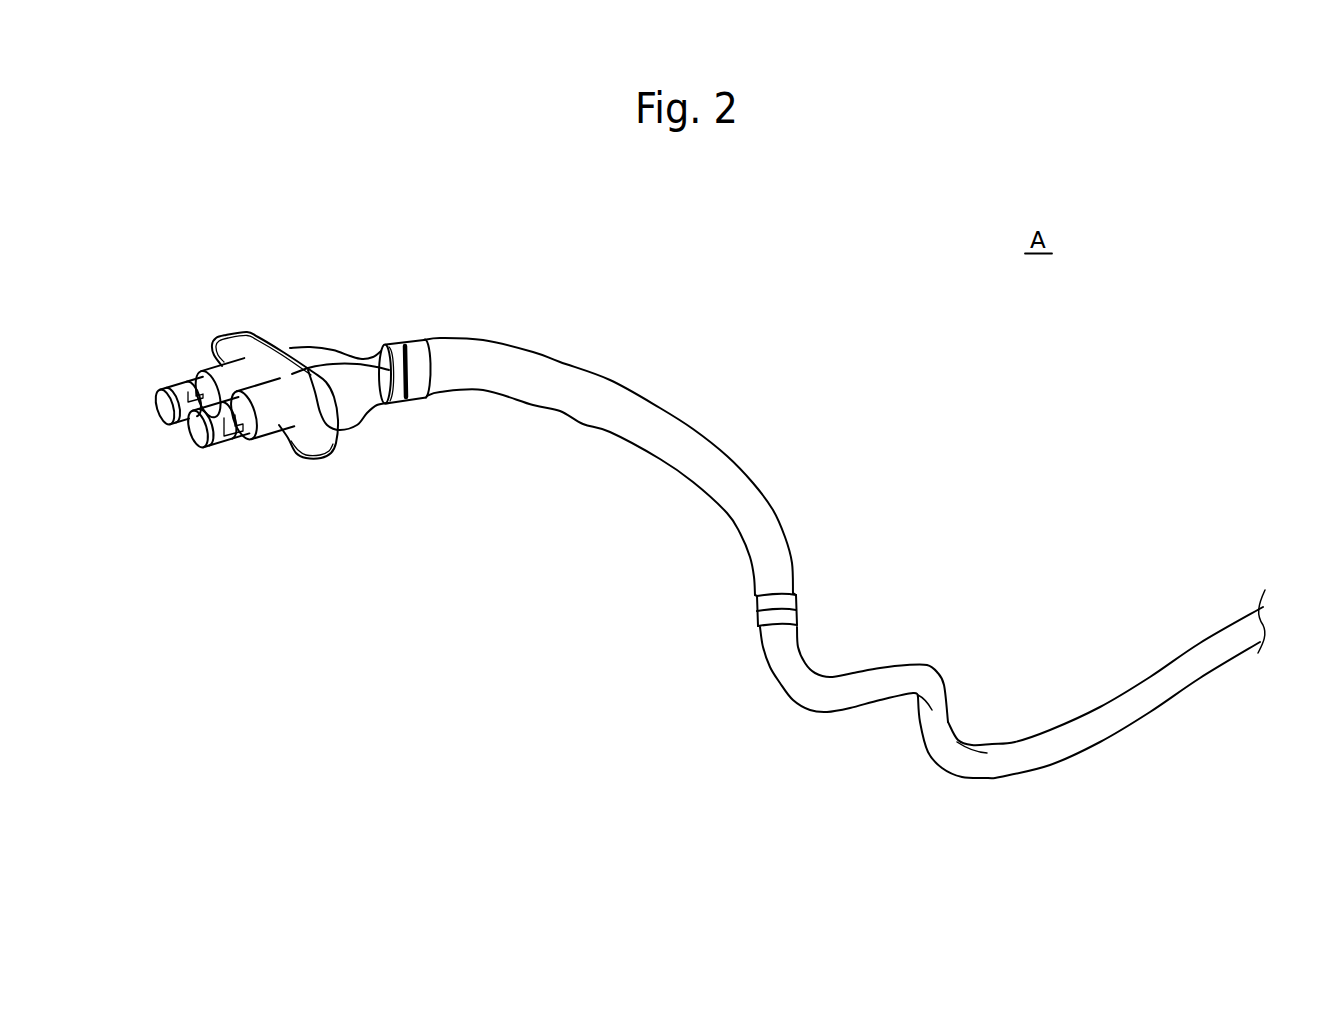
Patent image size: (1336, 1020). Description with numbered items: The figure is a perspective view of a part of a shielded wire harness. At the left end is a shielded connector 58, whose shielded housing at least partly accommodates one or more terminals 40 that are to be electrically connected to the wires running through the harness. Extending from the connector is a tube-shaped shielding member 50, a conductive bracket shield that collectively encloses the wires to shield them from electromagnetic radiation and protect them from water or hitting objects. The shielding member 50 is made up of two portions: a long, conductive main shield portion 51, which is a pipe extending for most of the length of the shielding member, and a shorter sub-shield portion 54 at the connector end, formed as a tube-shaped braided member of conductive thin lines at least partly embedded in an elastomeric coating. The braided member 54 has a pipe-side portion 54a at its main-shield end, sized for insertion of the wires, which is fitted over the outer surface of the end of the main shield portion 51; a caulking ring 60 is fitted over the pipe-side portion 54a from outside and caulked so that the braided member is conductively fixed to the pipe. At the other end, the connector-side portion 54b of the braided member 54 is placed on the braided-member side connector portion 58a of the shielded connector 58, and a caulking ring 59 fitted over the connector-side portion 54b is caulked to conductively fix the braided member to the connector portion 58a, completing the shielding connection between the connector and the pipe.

The terminals 40 is at (157, 431).
The tube-shaped shielding member 50 is at (826, 385).
The main shield portion 51 is at (1075, 733).
The sub-shield portion 54 is at (595, 417).
The pipe-side portion 54a is at (763, 620).
The connector-side portion 54b is at (407, 398).
The shielded connector 58 is at (348, 407).
The braided-member side connector portion 58a is at (374, 356).
The caulking ring 59 is at (416, 355).
The caulking ring 60 is at (797, 600).